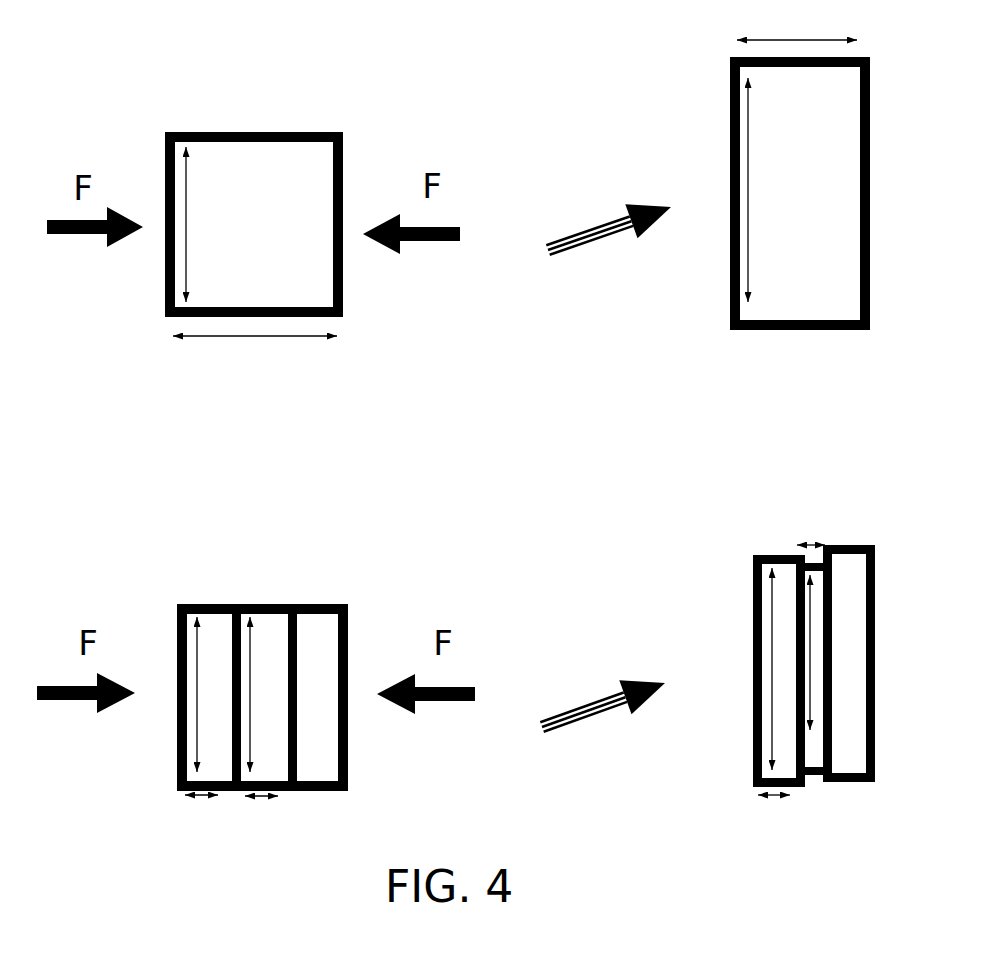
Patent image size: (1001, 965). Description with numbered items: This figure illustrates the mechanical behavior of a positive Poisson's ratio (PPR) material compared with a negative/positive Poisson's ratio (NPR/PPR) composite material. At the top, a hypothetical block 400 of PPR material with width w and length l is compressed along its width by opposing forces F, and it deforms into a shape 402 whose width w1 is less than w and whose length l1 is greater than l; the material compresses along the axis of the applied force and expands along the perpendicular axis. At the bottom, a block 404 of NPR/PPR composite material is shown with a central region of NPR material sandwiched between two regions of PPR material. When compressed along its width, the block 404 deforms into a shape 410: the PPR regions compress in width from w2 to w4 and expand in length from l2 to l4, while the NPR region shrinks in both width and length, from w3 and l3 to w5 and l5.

The block of PPR material 400 is at (224, 242).
The compressed block 402 is at (772, 201).
The block of NPR/PPR composite material 404 is at (219, 686).
The deformed shape of composite block 410 is at (821, 691).